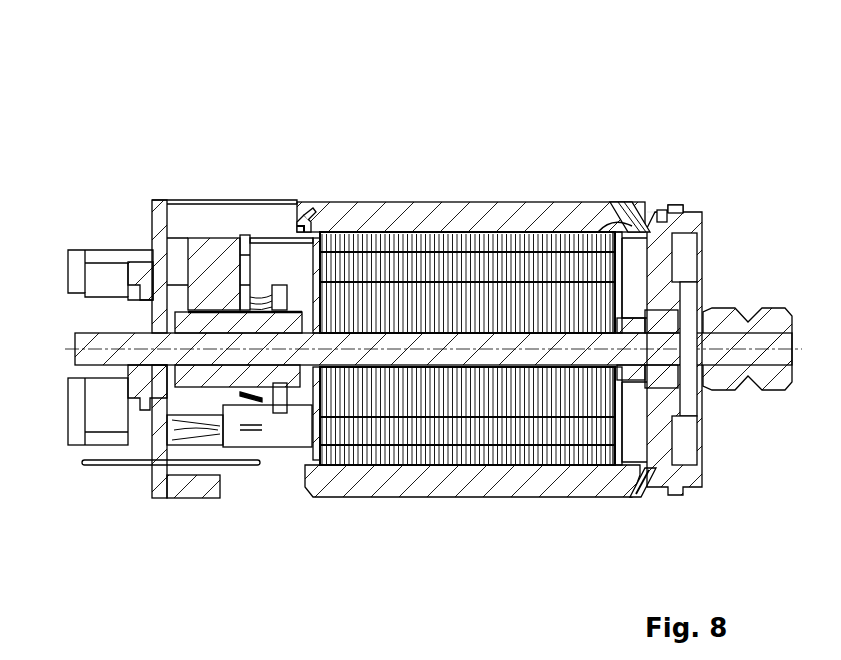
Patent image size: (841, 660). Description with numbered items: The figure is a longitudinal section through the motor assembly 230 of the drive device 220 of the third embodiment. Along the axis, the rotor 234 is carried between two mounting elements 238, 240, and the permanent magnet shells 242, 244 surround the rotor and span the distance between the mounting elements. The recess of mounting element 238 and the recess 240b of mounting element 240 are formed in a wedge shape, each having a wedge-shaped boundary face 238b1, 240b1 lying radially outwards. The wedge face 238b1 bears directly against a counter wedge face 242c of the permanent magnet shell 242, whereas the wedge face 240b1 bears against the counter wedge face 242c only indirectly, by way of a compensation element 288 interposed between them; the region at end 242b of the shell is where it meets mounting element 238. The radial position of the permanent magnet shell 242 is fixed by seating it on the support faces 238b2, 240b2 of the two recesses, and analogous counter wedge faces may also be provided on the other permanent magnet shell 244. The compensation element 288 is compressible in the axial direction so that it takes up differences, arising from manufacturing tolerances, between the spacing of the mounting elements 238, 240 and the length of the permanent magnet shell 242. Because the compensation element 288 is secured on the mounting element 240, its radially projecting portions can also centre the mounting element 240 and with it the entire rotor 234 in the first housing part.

The drive device 220 is at (668, 115).
The motor assembly 230 is at (128, 115).
The rotor 234 is at (353, 452).
The mounting element 238 is at (310, 215).
The wedge face 238b1 is at (312, 215).
The support face 238b2 is at (303, 225).
The mounting element 240 is at (685, 493).
The recess 240b is at (647, 208).
The wedge face 240b1 is at (630, 225).
The support face 240b2 is at (653, 222).
The permanent magnet shell 242 is at (458, 217).
The stator first end 242b is at (303, 215).
The counter wedge face 242c is at (632, 208).
The permanent magnet shell 244 is at (450, 480).
The compensation element 288 is at (633, 493).